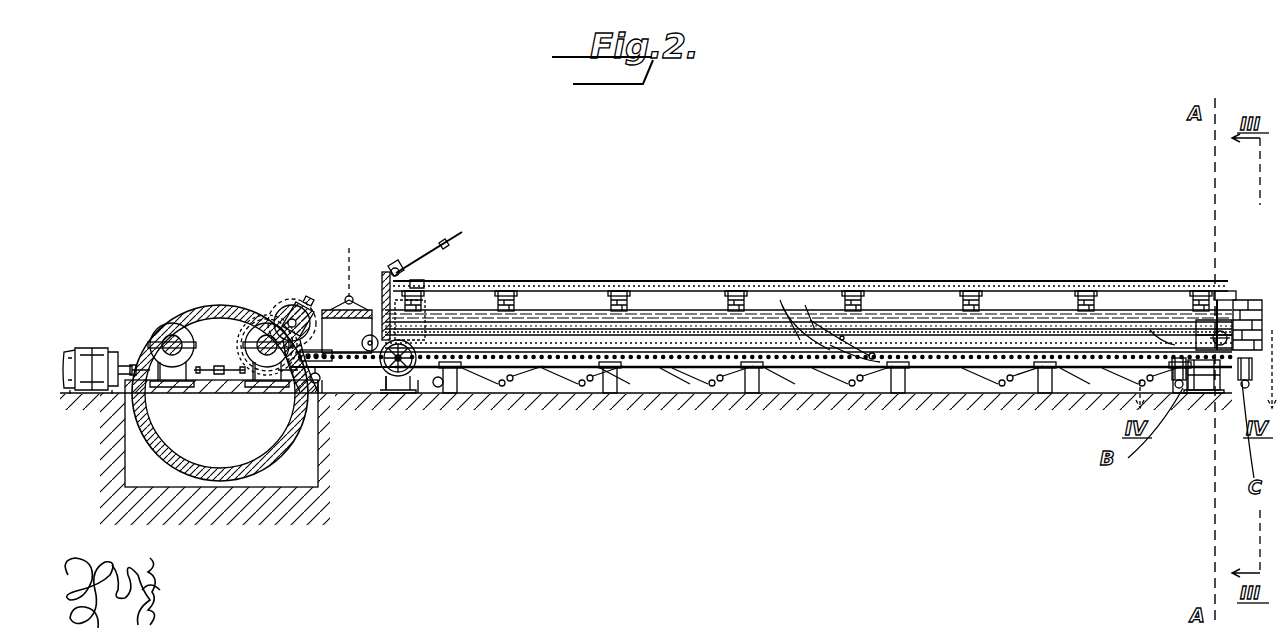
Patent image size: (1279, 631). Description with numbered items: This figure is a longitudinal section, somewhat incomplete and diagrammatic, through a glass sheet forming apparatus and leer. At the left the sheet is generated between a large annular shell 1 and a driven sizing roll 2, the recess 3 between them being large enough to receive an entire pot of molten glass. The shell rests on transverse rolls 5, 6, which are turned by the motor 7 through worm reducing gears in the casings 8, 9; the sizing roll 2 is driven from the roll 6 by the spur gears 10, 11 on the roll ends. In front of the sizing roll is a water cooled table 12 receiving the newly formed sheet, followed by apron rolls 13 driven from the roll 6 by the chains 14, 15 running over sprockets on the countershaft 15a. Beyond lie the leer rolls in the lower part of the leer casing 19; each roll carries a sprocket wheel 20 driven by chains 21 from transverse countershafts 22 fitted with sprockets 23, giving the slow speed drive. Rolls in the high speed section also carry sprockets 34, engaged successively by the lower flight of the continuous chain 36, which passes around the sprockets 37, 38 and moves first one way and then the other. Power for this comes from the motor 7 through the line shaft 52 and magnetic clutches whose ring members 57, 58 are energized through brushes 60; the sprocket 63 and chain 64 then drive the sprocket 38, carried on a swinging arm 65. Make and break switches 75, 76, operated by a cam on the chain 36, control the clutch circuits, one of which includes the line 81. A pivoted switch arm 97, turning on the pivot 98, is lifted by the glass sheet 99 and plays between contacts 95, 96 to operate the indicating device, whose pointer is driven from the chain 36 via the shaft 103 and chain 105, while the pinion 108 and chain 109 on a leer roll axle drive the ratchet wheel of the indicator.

The annular shell 1 is at (215, 307).
The sizing roll 2 is at (282, 312).
The recess 3 is at (272, 308).
The transverse roll 5 is at (172, 338).
The transverse roll 6 is at (262, 340).
The motor 7 is at (96, 352).
The casing 8 is at (173, 372).
The casing 9 is at (266, 372).
The spur gear 10 is at (272, 322).
The spur gear 11 is at (304, 328).
The water cooled table 12 is at (334, 310).
The apron rolls 13 is at (386, 300).
The chain 14 is at (278, 414).
The chain 15 is at (320, 392).
The countershaft 15a is at (322, 390).
The leer casing 19 is at (545, 312).
The sprocket wheel 20 is at (612, 392).
The chains 21 is at (783, 395).
The transverse countershaft 22 is at (808, 395).
The sprocket 23 is at (670, 387).
The sprocket 34 is at (650, 394).
The chain 36 is at (588, 332).
The sprocket 37 is at (372, 336).
The sprocket 38 is at (1222, 330).
The line shaft 52 is at (1075, 393).
The ring member 57 is at (1184, 390).
The ring member 58 is at (1181, 388).
The brush 60 is at (1206, 372).
The sprocket 63 is at (1163, 338).
The chain 64 is at (1178, 345).
The swinging arm 65 is at (1250, 380).
The make and break switch 75 is at (418, 342).
The make and break switch 76 is at (1198, 342).
The line 81 is at (395, 394).
The contact 95 is at (776, 322).
The contact 96 is at (796, 328).
The switch arm 97 is at (813, 328).
The pivot 98 is at (843, 338).
The glass sheet 99 is at (873, 352).
The shaft 103 is at (423, 300).
The chain 105 is at (432, 326).
The pinion 108 is at (437, 393).
The chain 109 is at (423, 384).